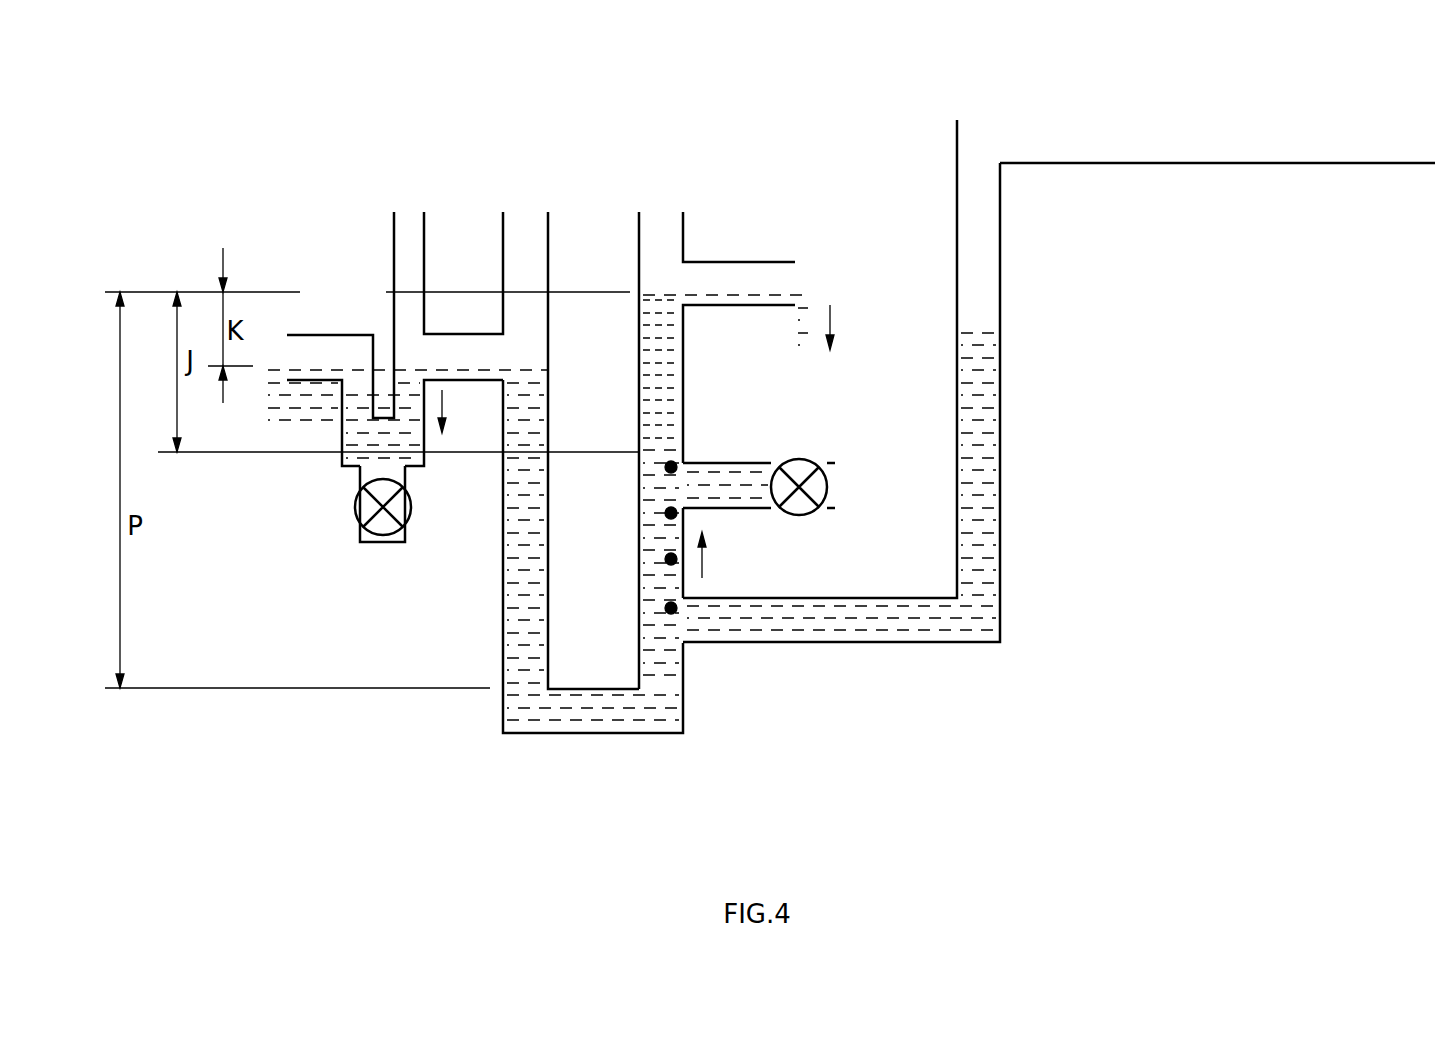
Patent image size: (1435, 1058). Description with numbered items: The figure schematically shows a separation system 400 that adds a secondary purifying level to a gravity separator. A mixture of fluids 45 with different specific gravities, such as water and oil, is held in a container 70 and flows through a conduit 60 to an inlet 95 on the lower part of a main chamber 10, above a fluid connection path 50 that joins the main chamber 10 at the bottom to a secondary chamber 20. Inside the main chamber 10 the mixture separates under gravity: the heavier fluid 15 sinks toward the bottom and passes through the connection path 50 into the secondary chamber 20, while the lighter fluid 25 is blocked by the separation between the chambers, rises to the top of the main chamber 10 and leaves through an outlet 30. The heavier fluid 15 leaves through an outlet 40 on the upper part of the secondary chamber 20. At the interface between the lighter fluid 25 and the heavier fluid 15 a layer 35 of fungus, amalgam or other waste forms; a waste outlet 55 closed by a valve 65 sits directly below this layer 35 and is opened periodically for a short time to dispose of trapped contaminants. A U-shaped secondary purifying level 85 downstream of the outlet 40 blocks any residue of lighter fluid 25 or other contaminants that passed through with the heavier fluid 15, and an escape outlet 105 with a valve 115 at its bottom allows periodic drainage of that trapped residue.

The separation system 400 is at (772, 103).
The main chamber 10 is at (639, 222).
The heavier fluid 15 is at (530, 582).
The secondary chamber 20 is at (548, 222).
The lighter fluid 25 is at (672, 342).
The outlet 30 is at (745, 262).
The layer 35 is at (685, 445).
The outlet 40 is at (463, 333).
The mixture of fluids 45 is at (972, 333).
The fluid connection path 50 is at (580, 720).
The waste outlet 55 is at (830, 510).
The conduit 60 is at (1002, 503).
The valve 65 is at (810, 460).
The container 70 is at (1175, 163).
The secondary purifying level 85 is at (342, 415).
The inlet 95 is at (683, 612).
The escape outlet 105 is at (360, 532).
The valve 115 is at (410, 508).